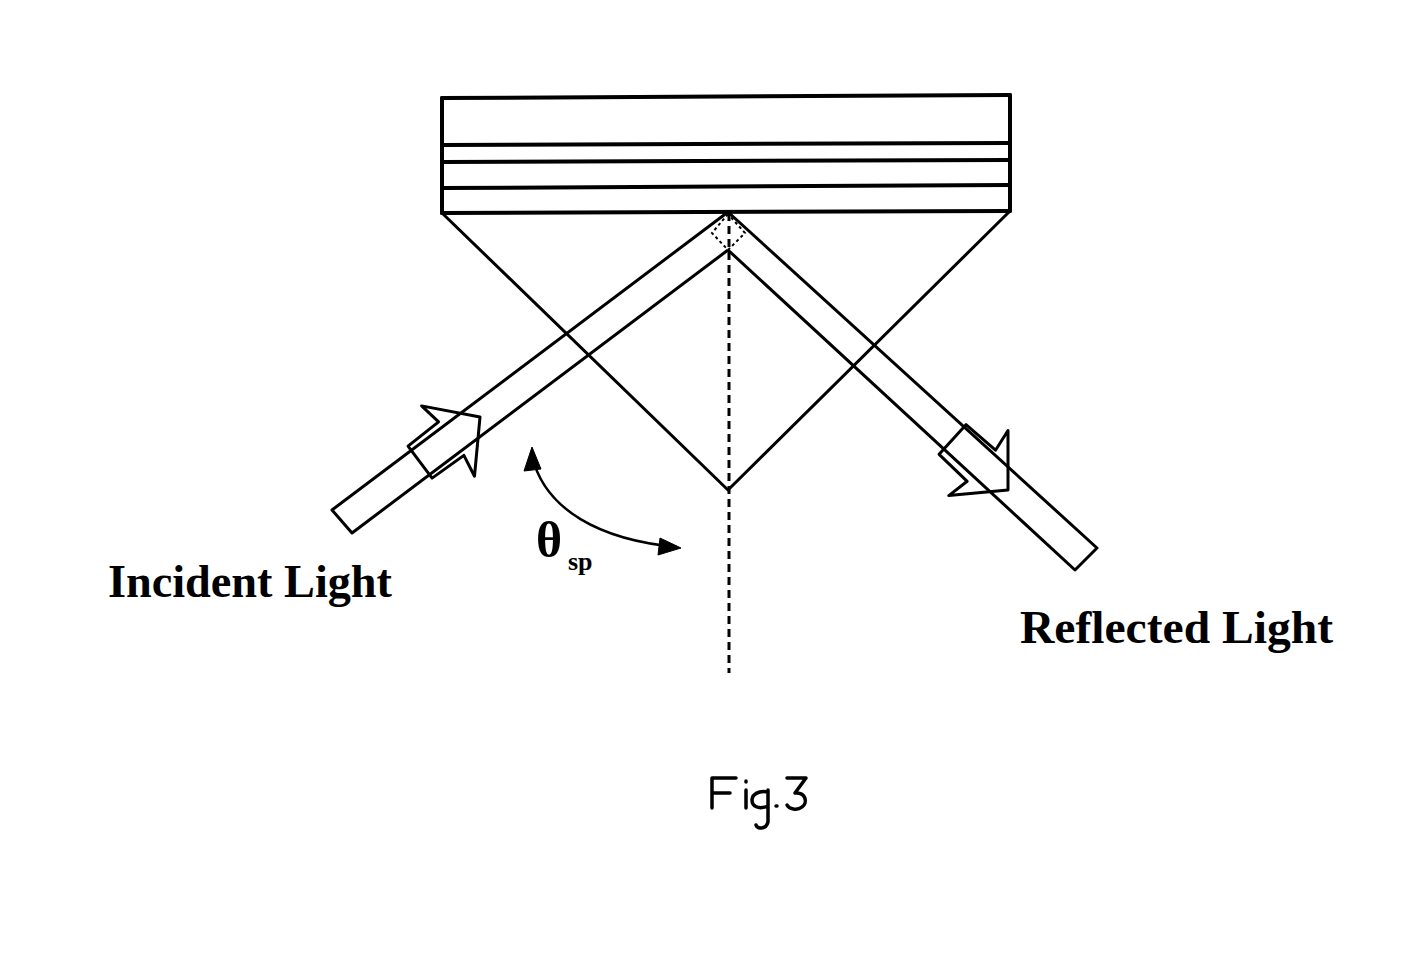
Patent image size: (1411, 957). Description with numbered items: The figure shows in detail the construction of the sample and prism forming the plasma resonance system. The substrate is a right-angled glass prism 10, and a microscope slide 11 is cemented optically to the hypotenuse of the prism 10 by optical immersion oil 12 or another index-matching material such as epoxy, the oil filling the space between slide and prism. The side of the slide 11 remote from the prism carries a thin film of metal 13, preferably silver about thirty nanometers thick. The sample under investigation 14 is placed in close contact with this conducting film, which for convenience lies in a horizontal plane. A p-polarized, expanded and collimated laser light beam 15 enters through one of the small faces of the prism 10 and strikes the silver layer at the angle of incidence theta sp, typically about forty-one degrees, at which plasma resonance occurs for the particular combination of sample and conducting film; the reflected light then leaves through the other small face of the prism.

The glass prism 10 is at (826, 350).
The microscope slide 11 is at (906, 174).
The optical immersion oil 12 is at (920, 240).
The thin film of metal 13 is at (826, 137).
The sample under investigation 14 is at (818, 104).
The light beam 15 is at (530, 372).